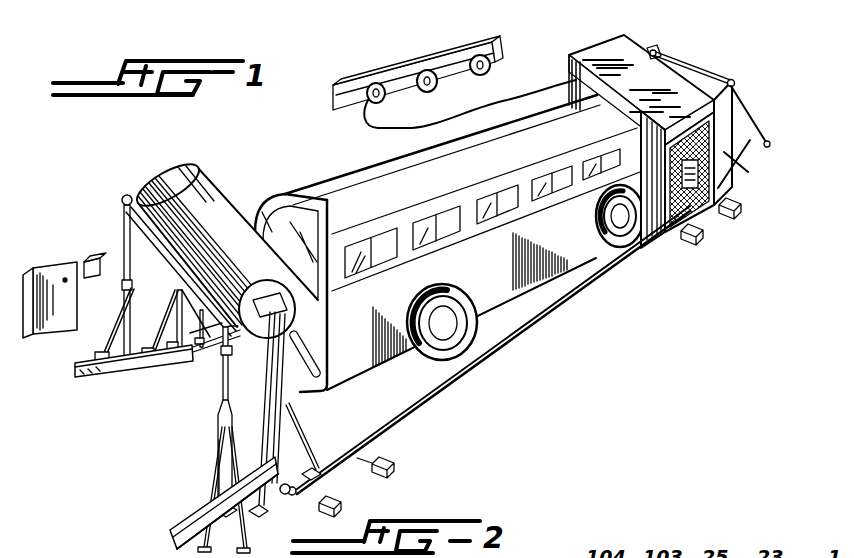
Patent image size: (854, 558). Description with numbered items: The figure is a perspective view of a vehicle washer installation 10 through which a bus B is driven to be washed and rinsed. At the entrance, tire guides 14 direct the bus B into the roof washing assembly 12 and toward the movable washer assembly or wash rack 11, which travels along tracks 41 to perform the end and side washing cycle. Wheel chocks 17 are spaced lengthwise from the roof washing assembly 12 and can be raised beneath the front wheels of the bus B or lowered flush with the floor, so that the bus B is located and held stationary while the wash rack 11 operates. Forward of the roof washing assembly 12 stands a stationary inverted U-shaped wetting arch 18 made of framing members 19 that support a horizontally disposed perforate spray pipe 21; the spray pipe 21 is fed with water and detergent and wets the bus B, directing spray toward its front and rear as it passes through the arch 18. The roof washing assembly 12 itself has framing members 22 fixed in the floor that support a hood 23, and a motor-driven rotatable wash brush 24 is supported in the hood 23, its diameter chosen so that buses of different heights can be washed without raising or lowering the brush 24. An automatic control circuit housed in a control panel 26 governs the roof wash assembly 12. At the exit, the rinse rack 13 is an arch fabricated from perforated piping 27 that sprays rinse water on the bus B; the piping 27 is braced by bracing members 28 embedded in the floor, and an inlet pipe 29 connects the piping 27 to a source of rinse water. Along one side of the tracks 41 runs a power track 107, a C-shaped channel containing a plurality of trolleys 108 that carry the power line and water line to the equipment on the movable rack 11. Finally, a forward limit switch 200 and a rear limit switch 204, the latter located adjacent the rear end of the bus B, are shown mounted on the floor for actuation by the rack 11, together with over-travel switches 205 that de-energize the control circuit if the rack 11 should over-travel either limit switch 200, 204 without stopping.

The bus B is at (506, 148).
The vehicle washer installation 10 is at (108, 155).
The movable washer assembly or wash rack 11 is at (737, 92).
The roof washing assembly 12 is at (119, 191).
The rinse rack 13 is at (708, 50).
The tire guides 14 is at (77, 368).
The wheel chocks 17 is at (636, 250).
The wetting arch 18 is at (222, 378).
The framing members 19 is at (217, 472).
The spray pipe 21 is at (161, 249).
The framing members 22 is at (280, 497).
The hood 23 is at (172, 172).
The wash brush 24 is at (263, 337).
The control panel 26 is at (48, 328).
The piping 27 is at (737, 64).
The bracing members 28 is at (738, 168).
The inlet pipe 29 is at (657, 50).
The tracks 41 is at (563, 305).
The power track 107 is at (392, 66).
The trolleys 108 is at (368, 102).
The forward limit switch 200 is at (702, 240).
The rear limit switch 204 is at (395, 463).
The over-travel switches 205 is at (740, 212).